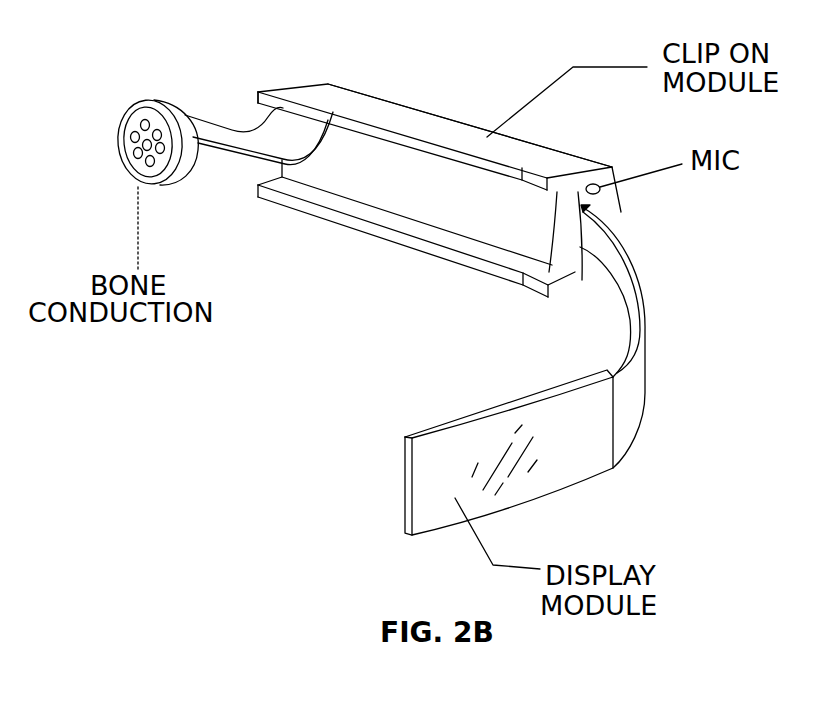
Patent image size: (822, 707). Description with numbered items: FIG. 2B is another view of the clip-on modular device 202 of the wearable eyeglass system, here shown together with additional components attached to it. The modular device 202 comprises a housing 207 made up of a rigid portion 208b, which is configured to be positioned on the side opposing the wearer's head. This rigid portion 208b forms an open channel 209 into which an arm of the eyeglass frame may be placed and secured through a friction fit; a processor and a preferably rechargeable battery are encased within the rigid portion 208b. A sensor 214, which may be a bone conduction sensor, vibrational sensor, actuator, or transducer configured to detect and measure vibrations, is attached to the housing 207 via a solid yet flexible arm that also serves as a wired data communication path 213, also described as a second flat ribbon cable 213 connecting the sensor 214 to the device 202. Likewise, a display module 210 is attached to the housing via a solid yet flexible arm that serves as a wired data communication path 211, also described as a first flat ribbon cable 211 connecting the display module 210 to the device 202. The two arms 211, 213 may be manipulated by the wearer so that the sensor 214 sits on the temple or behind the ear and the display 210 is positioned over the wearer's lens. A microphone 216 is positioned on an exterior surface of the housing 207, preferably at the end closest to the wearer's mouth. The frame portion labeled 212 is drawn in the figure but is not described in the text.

The modular device 202 is at (443, 132).
The housing 207 is at (330, 118).
The rigid portion 208b is at (409, 101).
The open channel 209 is at (388, 183).
The display module 210 is at (530, 487).
The first flat ribbon cable 211 is at (630, 385).
The frame arm 212 is at (637, 283).
The second flat ribbon cable 213 is at (237, 127).
The sensor 214 is at (178, 180).
The microphone 216 is at (601, 192).